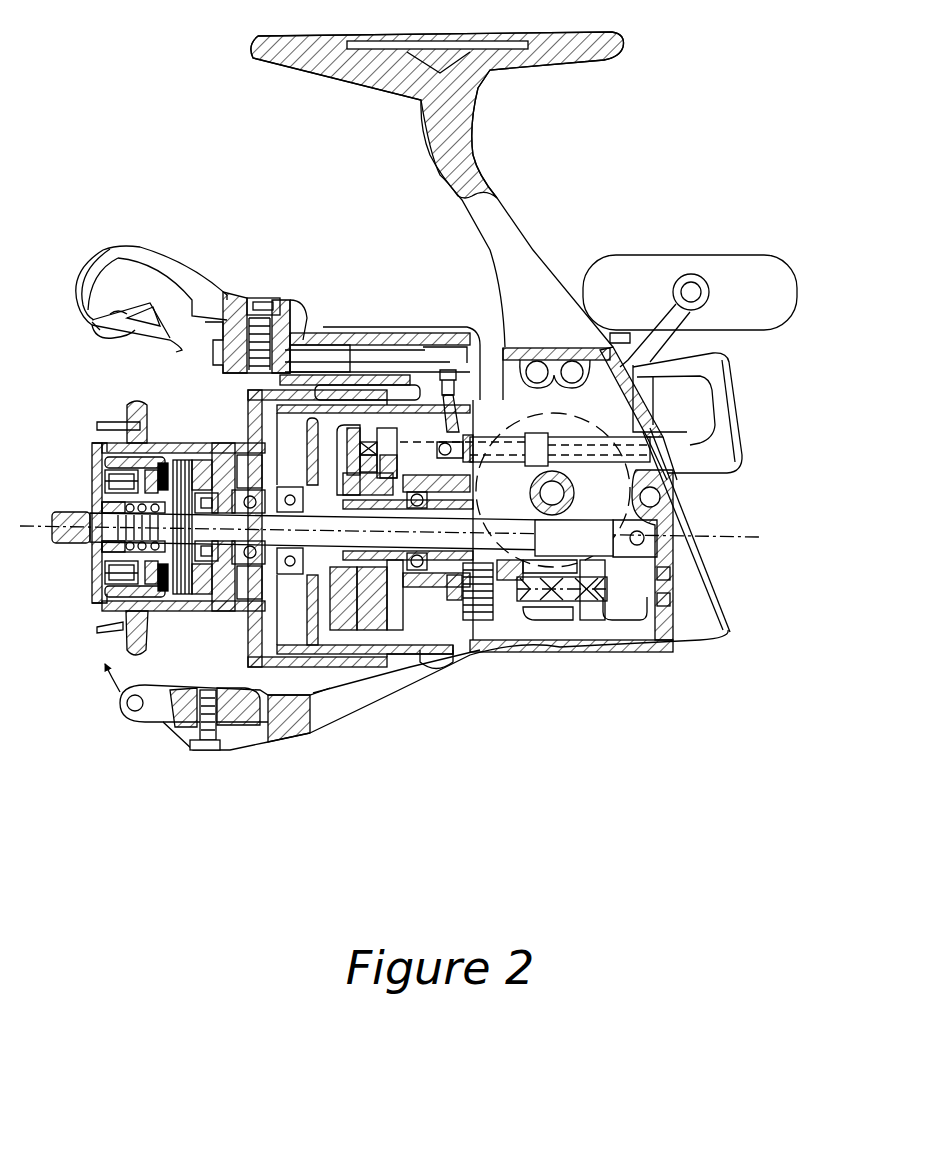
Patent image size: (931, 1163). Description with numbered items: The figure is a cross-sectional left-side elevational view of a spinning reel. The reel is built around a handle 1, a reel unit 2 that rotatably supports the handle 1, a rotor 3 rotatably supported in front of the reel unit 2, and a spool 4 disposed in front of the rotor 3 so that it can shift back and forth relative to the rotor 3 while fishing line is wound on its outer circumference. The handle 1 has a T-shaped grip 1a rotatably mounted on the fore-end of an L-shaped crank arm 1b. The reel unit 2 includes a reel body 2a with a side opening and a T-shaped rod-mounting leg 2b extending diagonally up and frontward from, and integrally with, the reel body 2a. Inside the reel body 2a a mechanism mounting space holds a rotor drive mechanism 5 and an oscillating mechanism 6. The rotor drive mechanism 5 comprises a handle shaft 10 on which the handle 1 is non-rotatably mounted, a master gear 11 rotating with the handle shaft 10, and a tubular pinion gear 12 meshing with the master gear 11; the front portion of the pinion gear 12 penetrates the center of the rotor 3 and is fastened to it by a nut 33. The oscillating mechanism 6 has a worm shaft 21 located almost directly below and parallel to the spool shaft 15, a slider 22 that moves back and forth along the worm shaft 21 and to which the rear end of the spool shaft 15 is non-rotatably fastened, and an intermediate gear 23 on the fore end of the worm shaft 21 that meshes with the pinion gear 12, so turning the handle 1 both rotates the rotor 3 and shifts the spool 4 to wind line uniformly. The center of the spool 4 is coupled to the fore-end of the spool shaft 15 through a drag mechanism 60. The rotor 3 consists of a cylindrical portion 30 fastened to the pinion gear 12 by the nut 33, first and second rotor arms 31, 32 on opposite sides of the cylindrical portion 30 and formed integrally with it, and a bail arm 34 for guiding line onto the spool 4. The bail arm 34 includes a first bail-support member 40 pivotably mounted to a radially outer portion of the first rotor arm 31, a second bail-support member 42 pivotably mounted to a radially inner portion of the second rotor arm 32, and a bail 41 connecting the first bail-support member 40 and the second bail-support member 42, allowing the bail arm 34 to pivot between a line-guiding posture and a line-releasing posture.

The handle 1 is at (660, 312).
The T-shaped grip 1a is at (706, 256).
The L-shaped crank arm 1b is at (612, 318).
The reel unit 2 is at (727, 537).
The reel body 2a is at (683, 490).
The T-shaped rod-mounting leg 2b is at (518, 240).
The rotor 3 is at (353, 680).
The spool 4 is at (178, 620).
The rotor drive mechanism 5 is at (583, 470).
The oscillating mechanism 6 is at (572, 622).
The handle shaft 10 is at (527, 437).
The master gear 11 is at (597, 610).
The pinion gear 12 is at (462, 628).
The spool shaft 15 is at (633, 622).
The worm shaft 21 is at (597, 655).
The slider 22 is at (667, 607).
The intermediate gear 23 is at (480, 630).
The cylindrical portion 30 is at (373, 672).
The first rotor arm 31 is at (291, 312).
The second rotor arm 32 is at (274, 742).
The nut 33 is at (288, 488).
The bail arm 34 is at (117, 363).
The first bail-support member 40 is at (190, 277).
The bail 41 is at (112, 692).
The second bail-support member 42 is at (156, 720).
The drag mechanism 60 is at (212, 450).